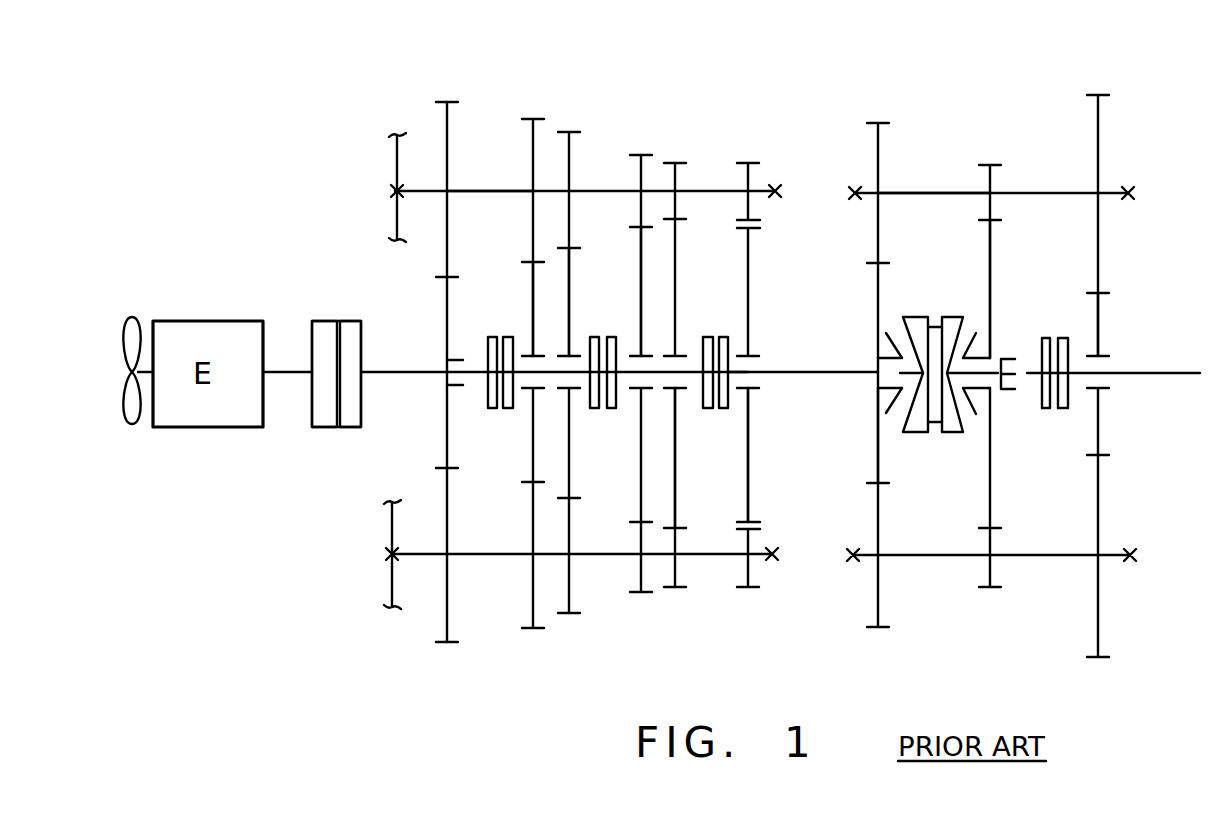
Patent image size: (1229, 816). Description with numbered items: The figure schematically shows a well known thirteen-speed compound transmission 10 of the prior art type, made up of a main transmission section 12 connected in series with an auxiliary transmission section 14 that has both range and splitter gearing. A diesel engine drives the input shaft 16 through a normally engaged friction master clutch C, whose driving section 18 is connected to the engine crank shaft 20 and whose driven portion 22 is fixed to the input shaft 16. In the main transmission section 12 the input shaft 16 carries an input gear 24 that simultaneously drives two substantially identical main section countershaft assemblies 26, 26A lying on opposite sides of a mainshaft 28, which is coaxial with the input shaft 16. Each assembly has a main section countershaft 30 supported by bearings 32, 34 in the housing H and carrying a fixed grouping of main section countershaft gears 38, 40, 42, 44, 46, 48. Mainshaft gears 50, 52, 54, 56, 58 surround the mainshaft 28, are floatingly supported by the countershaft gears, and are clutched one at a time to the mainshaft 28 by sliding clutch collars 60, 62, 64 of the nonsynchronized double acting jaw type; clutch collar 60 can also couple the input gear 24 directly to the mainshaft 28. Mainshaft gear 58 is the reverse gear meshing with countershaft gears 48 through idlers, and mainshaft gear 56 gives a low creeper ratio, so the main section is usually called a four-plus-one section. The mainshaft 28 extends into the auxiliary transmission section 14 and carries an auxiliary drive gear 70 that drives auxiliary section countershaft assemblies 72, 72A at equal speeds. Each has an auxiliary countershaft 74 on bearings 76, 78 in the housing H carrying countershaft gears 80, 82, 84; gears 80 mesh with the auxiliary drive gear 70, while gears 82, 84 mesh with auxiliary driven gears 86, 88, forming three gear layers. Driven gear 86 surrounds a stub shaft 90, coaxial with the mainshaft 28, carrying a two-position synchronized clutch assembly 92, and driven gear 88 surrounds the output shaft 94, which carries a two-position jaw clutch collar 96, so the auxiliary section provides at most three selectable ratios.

The compound transmission 10 is at (454, 677).
The main transmission section 12 is at (613, 97).
The auxiliary transmission section 14 is at (968, 97).
The input shaft 16 is at (407, 371).
The driving section of master clutch 18 is at (327, 428).
The engine crank shaft 20 is at (287, 371).
The driven portion of master clutch 22 is at (348, 428).
The input gear 24 is at (446, 432).
The main section countershaft assembly 26 is at (708, 191).
The main section countershaft assembly 26A is at (487, 553).
The mainshaft 28 is at (812, 371).
The main section countershaft 30 is at (490, 192).
The bearing 32 is at (393, 190).
The bearing 34 is at (775, 189).
The main section countershaft gear 38 is at (446, 118).
The main section countershaft gear 40 is at (531, 150).
The main section countershaft gear 42 is at (570, 161).
The main section countershaft gear 44 is at (640, 212).
The main section countershaft gear 46 is at (677, 208).
The main section countershaft gear 48 is at (750, 208).
The mainshaft gear 50 is at (531, 310).
The mainshaft gear 52 is at (570, 290).
The mainshaft gear 54 is at (640, 318).
The mainshaft gear 56 is at (677, 420).
The mainshaft gear 58 is at (748, 488).
The sliding clutch collar 60 is at (493, 408).
The sliding clutch collar 62 is at (594, 408).
The sliding clutch collar 64 is at (733, 305).
The auxiliary drive gear 70 is at (878, 455).
The auxiliary section countershaft assembly 72 is at (1044, 190).
The auxiliary section countershaft assembly 72A is at (1036, 554).
The auxiliary countershaft 74 is at (905, 195).
The bearing 76 is at (1130, 193).
The bearing 78 is at (855, 190).
The auxiliary section countershaft gear 80 is at (879, 135).
The auxiliary section countershaft gear 82 is at (1015, 140).
The auxiliary section countershaft gear 84 is at (1099, 120).
The auxiliary section driven gear 86 is at (991, 263).
The auxiliary section driven gear 88 is at (1099, 320).
The stub shaft 90 is at (906, 378).
The synchronized clutch assembly 92 is at (954, 318).
The output shaft 94 is at (1170, 373).
The jaw clutch collar 96 is at (1045, 338).
The housing H is at (395, 155).
The master clutch C is at (330, 320).